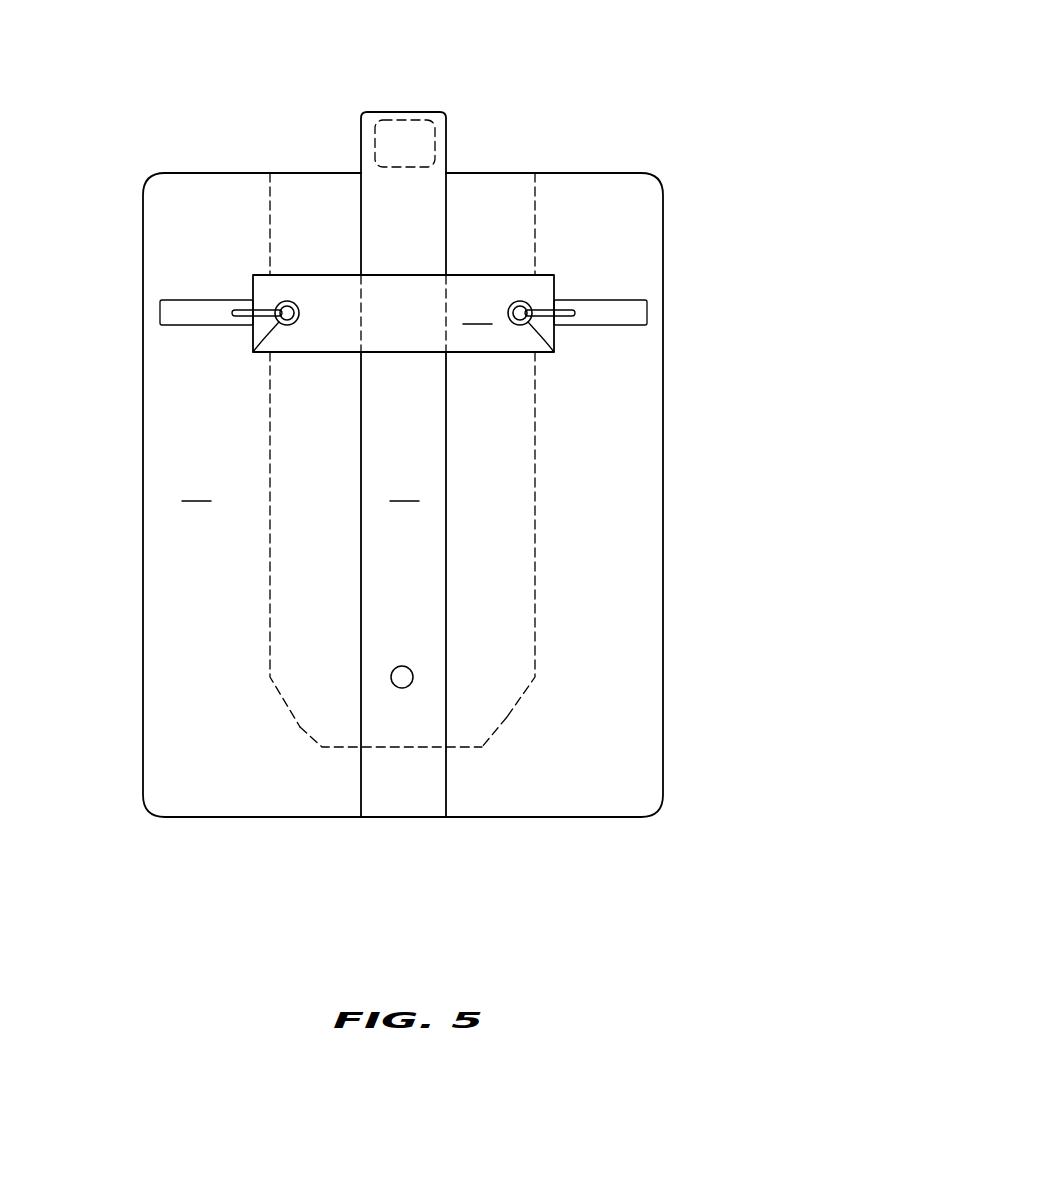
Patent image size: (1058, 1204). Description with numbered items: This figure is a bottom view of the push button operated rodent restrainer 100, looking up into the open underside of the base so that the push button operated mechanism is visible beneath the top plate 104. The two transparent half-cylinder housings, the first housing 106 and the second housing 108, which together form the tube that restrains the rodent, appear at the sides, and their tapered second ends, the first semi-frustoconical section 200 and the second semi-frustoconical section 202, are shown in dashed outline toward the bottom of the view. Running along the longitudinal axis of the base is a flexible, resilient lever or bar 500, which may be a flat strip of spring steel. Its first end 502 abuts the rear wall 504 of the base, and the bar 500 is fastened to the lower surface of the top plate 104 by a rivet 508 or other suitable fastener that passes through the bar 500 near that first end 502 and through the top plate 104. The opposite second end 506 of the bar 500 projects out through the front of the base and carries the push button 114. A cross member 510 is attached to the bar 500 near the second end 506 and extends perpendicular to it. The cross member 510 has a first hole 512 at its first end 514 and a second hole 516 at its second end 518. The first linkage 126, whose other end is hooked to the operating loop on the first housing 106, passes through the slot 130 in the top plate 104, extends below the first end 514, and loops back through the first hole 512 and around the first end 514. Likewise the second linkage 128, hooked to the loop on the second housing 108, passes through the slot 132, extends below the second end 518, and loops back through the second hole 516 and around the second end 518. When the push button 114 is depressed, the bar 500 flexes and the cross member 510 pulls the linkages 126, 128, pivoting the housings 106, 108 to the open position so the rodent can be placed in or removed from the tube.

The push button operated rodent restrainer 100 is at (687, 110).
The top plate 104 is at (196, 489).
The first transparent plastic half-cylinder housing 106 is at (270, 590).
The second transparent plastic half-cylinder housing 108 is at (535, 592).
The push button 114 is at (425, 150).
The first linkage 126 is at (253, 352).
The second linkage 128 is at (554, 352).
The slot 130 is at (160, 315).
The slot 132 is at (647, 315).
The first semi-frustoconical section 200 is at (300, 727).
The second semi-frustoconical section 202 is at (507, 717).
The lever or bar 500 is at (404, 489).
The first end 502 is at (412, 817).
The rear wall 504 is at (543, 817).
The second end 506 is at (412, 112).
The rivet 508 is at (410, 673).
The cross member 510 is at (403, 313).
The first hole 512 is at (279, 304).
The first end 514 is at (252, 286).
The second hole 516 is at (528, 304).
The second end 518 is at (555, 287).